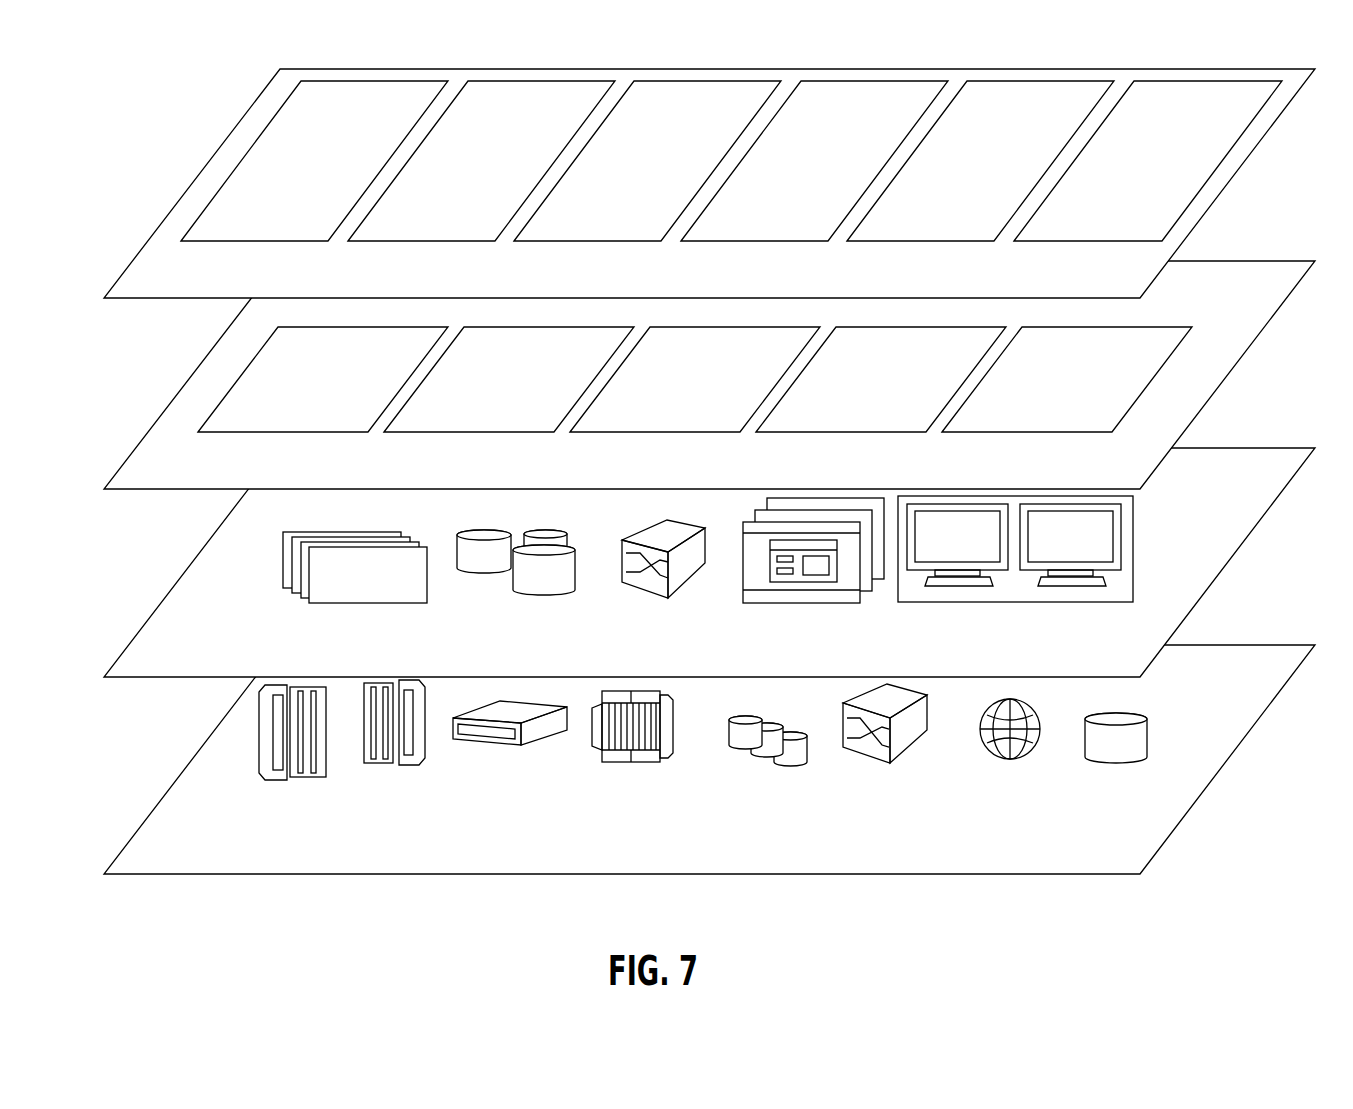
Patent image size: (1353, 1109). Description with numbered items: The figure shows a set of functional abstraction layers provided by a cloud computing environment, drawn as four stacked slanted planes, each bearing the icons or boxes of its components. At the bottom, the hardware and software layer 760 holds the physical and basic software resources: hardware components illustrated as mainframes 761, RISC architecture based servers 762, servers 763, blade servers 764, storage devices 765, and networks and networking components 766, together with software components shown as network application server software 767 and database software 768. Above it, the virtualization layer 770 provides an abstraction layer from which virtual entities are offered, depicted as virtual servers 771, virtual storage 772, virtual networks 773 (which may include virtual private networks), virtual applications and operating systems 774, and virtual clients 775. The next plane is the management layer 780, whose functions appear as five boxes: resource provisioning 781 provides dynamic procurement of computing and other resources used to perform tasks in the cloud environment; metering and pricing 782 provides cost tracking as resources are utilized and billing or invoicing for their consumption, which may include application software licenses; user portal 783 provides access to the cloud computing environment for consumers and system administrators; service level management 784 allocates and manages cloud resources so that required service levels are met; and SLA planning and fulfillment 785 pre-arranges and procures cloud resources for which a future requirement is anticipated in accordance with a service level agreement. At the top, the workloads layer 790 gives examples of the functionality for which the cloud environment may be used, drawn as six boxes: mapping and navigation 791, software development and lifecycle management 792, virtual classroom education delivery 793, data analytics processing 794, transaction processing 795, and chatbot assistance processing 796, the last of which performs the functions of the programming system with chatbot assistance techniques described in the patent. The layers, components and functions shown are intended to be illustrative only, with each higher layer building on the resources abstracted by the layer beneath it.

The hardware and software layer 760 is at (158, 876).
The mainframes 761 is at (307, 781).
The RISC architecture based servers 762 is at (407, 766).
The servers 763 is at (540, 746).
The blade servers 764 is at (650, 763).
The storage devices 765 is at (767, 756).
The networks and networking components 766 is at (878, 764).
The network application server software 767 is at (1005, 760).
The database software 768 is at (1115, 758).
The virtualization layer 770 is at (158, 679).
The virtual servers 771 is at (395, 604).
The virtual storage 772 is at (553, 592).
The virtual networks 773 is at (688, 584).
The virtual applications and operating systems 774 is at (845, 604).
The virtual clients 775 is at (1017, 603).
The management layer 780 is at (158, 491).
The resource provisioning 781 is at (304, 391).
The metering and pricing 782 is at (490, 391).
The user portal 783 is at (676, 391).
The service level management 784 is at (862, 391).
The SLA planning and fulfillment 785 is at (1048, 391).
The workloads layer 790 is at (158, 300).
The mapping and navigation 791 is at (336, 171).
The software development and lifecycle management 792 is at (503, 171).
The virtual classroom education delivery 793 is at (669, 171).
The data analytics processing 794 is at (836, 171).
The transaction processing 795 is at (1002, 171).
The chatbot assistance processing 796 is at (1170, 171).